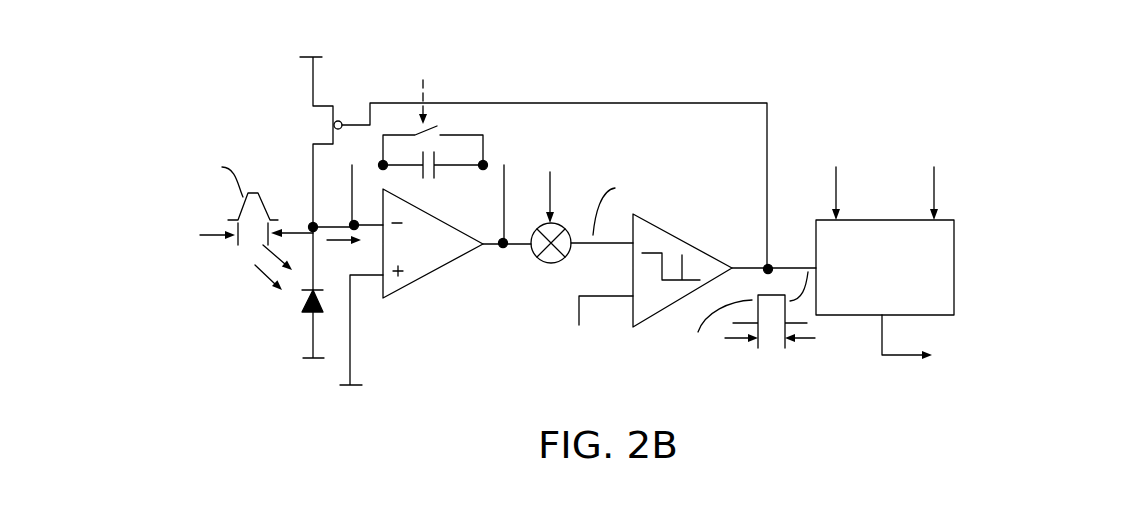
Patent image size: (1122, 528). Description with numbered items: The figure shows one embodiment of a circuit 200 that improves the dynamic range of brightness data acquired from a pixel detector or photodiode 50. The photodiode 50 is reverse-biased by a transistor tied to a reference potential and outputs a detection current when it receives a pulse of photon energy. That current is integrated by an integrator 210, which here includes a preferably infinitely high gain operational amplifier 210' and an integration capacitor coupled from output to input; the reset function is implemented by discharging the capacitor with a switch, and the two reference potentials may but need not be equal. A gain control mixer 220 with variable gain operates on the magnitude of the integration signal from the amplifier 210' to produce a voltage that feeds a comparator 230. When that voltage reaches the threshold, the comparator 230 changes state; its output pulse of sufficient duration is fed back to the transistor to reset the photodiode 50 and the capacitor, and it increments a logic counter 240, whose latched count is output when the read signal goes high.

The circuit 200 is at (591, 58).
The photodiode 50 is at (290, 307).
The integrator 210 is at (435, 238).
The operational amplifier 210' is at (433, 283).
The gain control mixer 220 is at (562, 253).
The comparator 230 is at (685, 238).
The logic counter 240 is at (955, 253).